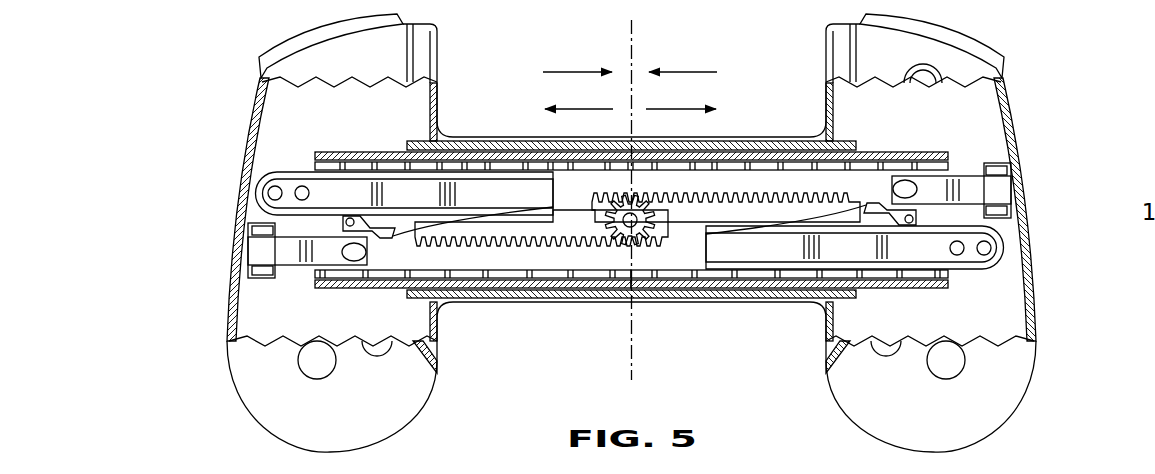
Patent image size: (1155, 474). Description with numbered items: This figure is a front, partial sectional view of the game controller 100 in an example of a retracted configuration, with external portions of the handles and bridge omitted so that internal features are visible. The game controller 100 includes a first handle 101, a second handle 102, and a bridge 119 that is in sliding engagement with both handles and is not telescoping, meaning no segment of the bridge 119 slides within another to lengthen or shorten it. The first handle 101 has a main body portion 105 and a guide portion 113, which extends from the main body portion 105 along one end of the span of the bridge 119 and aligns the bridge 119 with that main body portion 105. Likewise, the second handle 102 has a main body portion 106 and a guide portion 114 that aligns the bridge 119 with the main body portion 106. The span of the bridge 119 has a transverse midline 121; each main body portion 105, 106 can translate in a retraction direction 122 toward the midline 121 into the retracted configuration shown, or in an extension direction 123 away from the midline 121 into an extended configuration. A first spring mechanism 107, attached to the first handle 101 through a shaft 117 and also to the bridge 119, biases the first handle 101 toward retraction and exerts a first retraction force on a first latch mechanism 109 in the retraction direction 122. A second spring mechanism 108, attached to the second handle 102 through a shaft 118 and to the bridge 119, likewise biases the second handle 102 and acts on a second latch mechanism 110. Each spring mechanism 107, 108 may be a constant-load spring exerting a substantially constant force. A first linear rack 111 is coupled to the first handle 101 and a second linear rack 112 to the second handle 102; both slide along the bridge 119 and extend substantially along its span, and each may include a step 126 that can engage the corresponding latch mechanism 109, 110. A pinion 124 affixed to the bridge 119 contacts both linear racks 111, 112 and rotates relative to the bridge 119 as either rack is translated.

The game controller 100 is at (222, 81).
The first handle 101 is at (211, 381).
The second handle 102 is at (1049, 379).
The main body portion 105 is at (404, 430).
The main body portion 106 is at (861, 430).
The first spring mechanism 107 is at (298, 267).
The second spring mechanism 108 is at (963, 174).
The first latch mechanism 109 is at (382, 257).
The second latch mechanism 110 is at (884, 192).
The first linear rack 111 is at (468, 205).
The second linear rack 112 is at (837, 259).
The guide portion 113 is at (538, 304).
The guide portion 114 is at (726, 304).
The shaft 117 is at (262, 278).
The shaft 118 is at (1010, 226).
The bridge 119 is at (368, 152).
The transverse midline 121 is at (634, 42).
The retraction direction 122 is at (570, 72).
The extension direction 123 is at (570, 108).
The pinion 124 is at (651, 243).
The step 126 is at (573, 202).